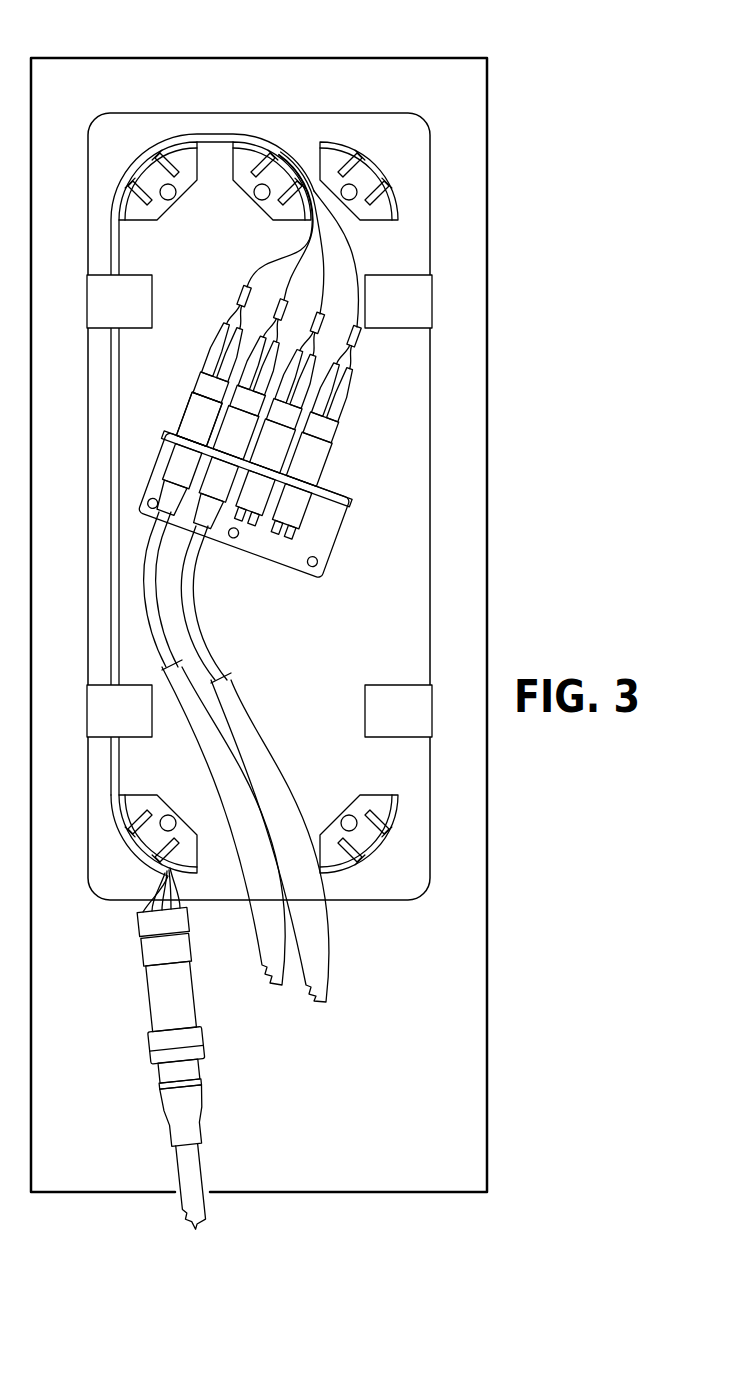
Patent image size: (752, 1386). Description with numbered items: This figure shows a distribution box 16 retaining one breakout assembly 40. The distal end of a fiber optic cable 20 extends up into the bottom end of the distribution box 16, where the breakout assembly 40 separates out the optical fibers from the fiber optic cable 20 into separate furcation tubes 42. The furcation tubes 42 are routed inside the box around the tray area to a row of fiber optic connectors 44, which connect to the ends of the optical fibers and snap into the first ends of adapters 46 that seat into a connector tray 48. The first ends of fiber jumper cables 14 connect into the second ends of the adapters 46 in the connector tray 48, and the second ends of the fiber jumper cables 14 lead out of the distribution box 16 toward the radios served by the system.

The distribution box 16 is at (259, 58).
The furcation tubes 42 is at (110, 527).
The fiber optic connectors 44 is at (202, 368).
The adapters 46 is at (190, 403).
The connector tray 48 is at (343, 490).
The fiber jumper cables 14 is at (313, 935).
The breakout assembly 40 is at (150, 998).
The fiber optic cable 20 is at (177, 1165).